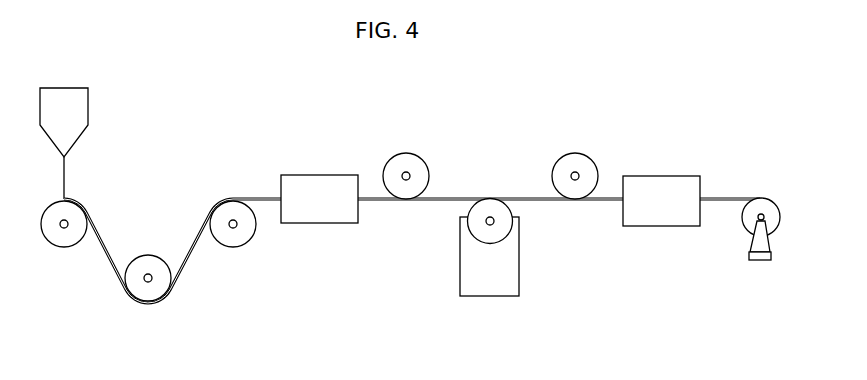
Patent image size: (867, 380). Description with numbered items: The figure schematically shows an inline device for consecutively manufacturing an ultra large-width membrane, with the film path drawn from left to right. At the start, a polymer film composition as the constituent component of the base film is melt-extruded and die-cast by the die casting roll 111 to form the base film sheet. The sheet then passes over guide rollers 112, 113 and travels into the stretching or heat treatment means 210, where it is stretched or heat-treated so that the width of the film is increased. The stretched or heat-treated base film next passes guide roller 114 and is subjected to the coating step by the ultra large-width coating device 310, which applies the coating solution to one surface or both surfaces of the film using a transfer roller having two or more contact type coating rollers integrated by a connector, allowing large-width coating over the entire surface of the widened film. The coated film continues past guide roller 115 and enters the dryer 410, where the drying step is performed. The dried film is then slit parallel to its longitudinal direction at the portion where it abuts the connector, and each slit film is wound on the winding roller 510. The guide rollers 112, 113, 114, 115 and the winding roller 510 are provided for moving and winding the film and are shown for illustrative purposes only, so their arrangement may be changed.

The die casting roll 111 is at (60, 244).
The guide roller 112 is at (148, 262).
The guide roller 113 is at (229, 244).
The guide roller 114 is at (403, 157).
The guide roller 115 is at (573, 162).
The stretching or heat treatment means 210 is at (323, 178).
The ultra large-width coating device 310 is at (494, 285).
The dryer 410 is at (665, 183).
The winding roller 510 is at (760, 207).